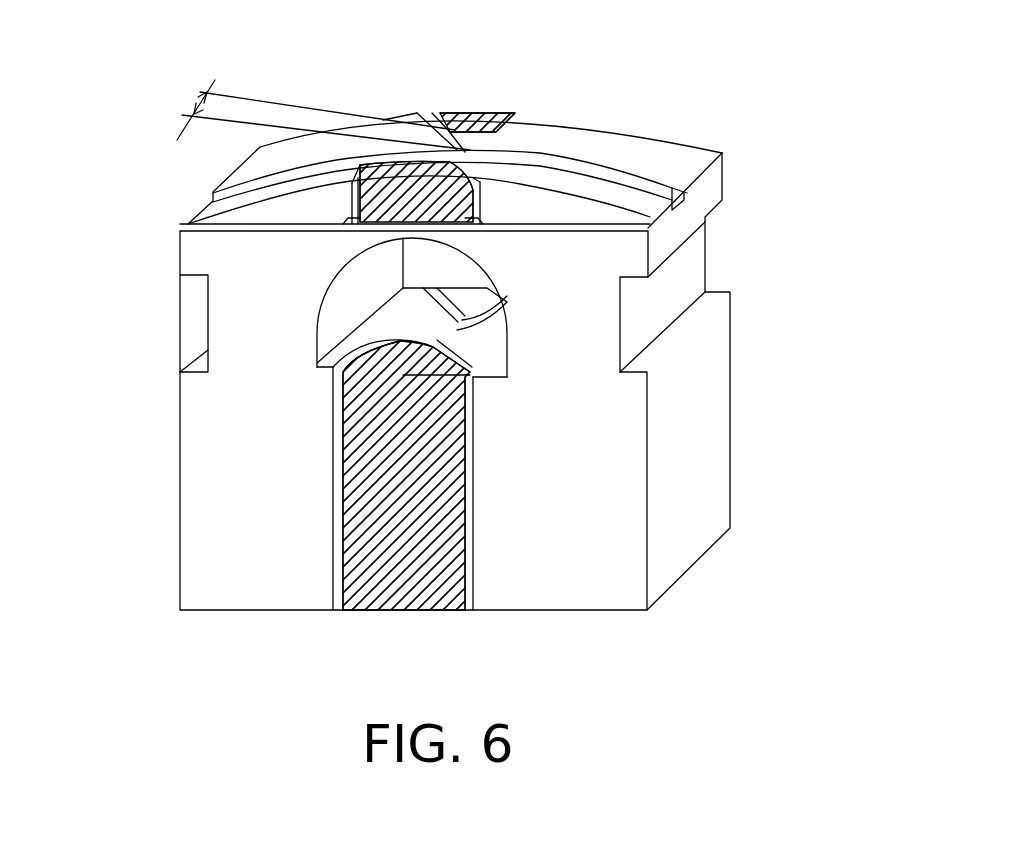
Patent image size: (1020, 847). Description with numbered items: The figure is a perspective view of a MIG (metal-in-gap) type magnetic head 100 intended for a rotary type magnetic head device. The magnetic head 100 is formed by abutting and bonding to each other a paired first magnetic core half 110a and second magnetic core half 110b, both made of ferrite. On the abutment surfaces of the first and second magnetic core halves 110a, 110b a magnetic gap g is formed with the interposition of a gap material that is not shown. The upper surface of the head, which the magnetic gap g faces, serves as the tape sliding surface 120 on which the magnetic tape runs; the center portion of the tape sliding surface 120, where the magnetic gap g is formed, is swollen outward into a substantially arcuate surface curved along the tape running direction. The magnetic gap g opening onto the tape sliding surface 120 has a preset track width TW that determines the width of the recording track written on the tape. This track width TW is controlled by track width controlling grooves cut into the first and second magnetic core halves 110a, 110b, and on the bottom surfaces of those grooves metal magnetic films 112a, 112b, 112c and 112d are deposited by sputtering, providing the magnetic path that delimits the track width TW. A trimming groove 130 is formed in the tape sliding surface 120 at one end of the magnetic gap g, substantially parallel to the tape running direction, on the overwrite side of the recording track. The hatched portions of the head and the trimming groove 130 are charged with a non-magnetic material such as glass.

The magnetic head 100 is at (723, 468).
The first magnetic core half 110a is at (587, 585).
The second magnetic core half 110b is at (203, 588).
The tape sliding surface 120 is at (670, 157).
The trimming groove 130 is at (684, 197).
The metal magnetic film 112a is at (502, 117).
The metal magnetic film 112b is at (485, 222).
The metal magnetic film 112c is at (345, 207).
The metal magnetic film 112d is at (442, 112).
The magnetic gap g is at (410, 130).
The track width TW is at (323, 102).